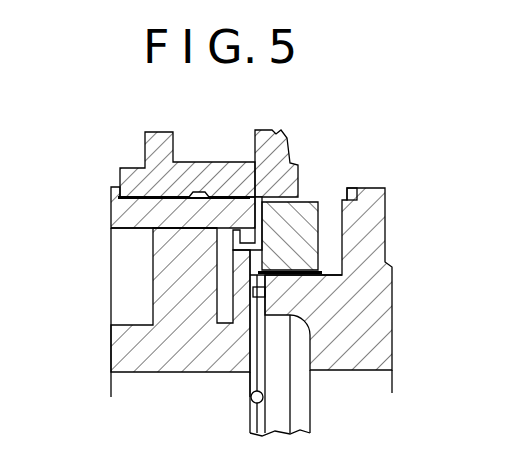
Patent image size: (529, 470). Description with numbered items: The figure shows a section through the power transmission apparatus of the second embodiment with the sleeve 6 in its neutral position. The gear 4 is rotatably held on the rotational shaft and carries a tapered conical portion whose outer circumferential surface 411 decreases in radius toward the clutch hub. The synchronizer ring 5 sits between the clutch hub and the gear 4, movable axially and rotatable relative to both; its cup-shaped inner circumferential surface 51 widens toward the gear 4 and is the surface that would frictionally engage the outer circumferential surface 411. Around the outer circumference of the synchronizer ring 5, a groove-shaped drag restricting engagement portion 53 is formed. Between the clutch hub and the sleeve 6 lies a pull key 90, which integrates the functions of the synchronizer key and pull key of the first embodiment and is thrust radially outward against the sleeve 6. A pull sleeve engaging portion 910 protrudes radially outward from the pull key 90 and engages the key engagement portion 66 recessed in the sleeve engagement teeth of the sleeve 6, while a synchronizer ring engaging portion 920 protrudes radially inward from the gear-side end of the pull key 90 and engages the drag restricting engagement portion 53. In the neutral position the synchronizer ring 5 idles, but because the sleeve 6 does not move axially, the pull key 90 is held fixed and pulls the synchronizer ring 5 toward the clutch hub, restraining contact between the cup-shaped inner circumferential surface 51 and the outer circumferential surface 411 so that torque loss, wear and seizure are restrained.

The gear 4 is at (375, 282).
The synchronizer ring 5 is at (293, 215).
The sleeve 6 is at (237, 182).
The cup-shaped inner circumferential surface 51 is at (297, 268).
The drag restricting engagement portion 53 is at (250, 245).
The key engagement portion 66 is at (213, 197).
The pull key 90 is at (132, 208).
The pull sleeve engaging portion 910 is at (120, 170).
The synchronizer ring engaging portion 920 is at (252, 212).
The outer circumferential surface 411 is at (290, 283).